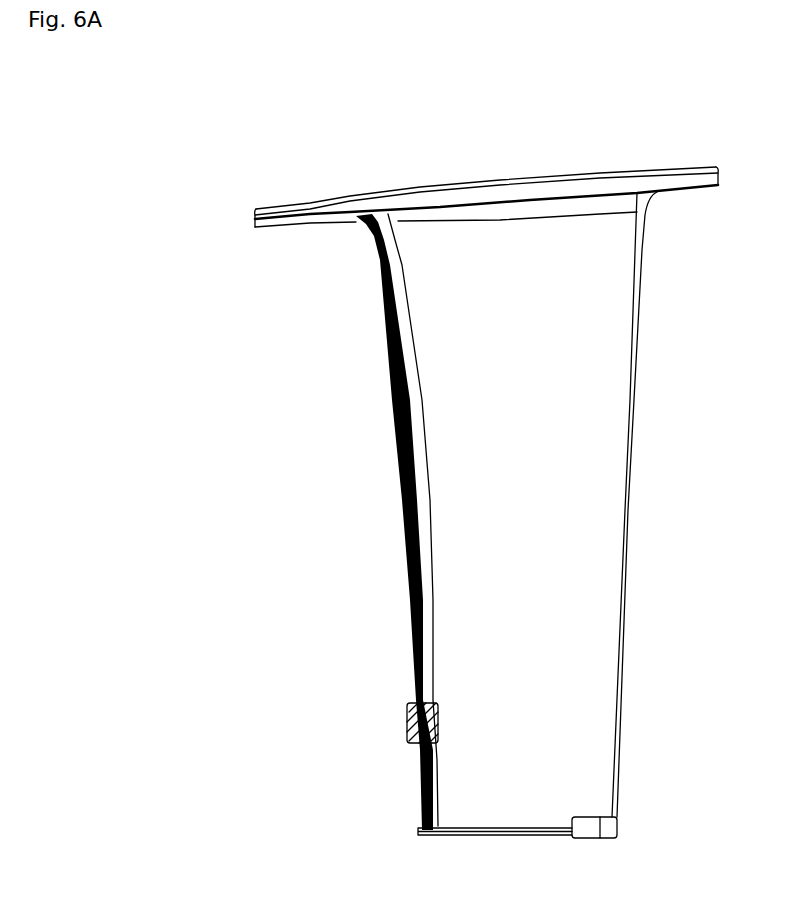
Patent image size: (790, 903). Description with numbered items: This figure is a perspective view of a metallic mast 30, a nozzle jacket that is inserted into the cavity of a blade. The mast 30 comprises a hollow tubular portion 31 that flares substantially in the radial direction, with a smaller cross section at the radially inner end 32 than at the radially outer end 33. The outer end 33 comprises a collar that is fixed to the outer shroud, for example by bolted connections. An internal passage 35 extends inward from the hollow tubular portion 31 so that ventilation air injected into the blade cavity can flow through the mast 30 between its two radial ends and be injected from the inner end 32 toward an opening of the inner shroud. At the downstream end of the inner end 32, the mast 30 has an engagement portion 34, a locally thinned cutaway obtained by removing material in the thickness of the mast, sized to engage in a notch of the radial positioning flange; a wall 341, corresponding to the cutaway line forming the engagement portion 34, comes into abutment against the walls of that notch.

The mast 30 is at (308, 396).
The hollow tubular portion 31 is at (618, 460).
The radially inner end 32 is at (486, 828).
The radially outer end 33 is at (306, 214).
The engagement portion 34 is at (588, 838).
The wall 341 is at (590, 818).
The internal passage 35 is at (437, 186).